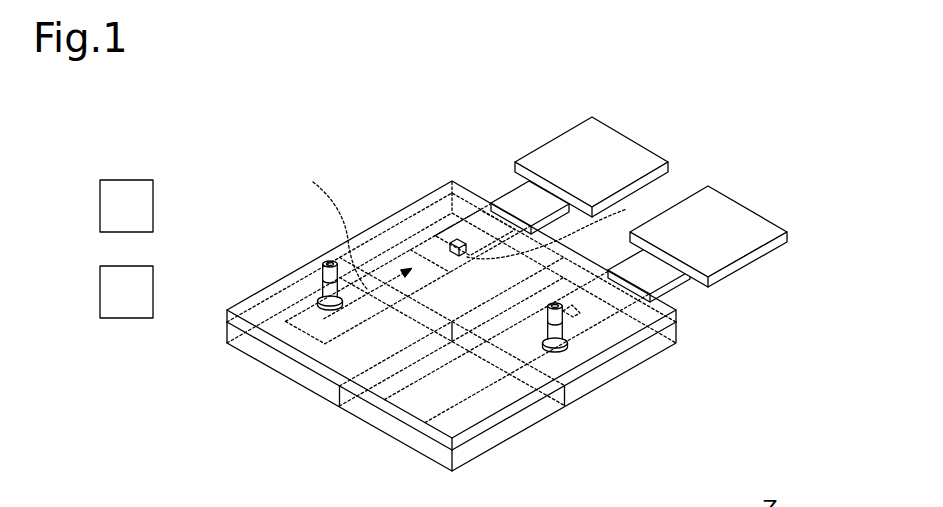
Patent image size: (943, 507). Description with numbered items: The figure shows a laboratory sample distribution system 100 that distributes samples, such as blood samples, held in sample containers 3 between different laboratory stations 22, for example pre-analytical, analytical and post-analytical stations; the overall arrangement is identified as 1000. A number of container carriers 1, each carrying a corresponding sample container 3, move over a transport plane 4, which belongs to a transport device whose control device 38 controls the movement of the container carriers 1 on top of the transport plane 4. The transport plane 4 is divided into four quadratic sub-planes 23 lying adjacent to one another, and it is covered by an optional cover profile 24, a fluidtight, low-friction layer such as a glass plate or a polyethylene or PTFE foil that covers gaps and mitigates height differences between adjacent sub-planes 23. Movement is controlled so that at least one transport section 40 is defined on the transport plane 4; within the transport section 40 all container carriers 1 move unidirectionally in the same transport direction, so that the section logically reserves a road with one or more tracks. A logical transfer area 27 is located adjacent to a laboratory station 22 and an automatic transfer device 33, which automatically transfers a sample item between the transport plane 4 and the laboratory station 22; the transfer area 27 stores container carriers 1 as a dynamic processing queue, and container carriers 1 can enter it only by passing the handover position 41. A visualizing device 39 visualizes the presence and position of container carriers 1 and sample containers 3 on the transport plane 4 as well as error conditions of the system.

The container carrier 1 is at (320, 287).
The sample container 3 is at (323, 270).
The transport plane 4 is at (429, 302).
The laboratory station 22 is at (615, 148).
The sub-plane 23 is at (253, 346).
The cover profile 24 is at (397, 215).
The transfer area 27 is at (435, 234).
The automatic transfer device 33 is at (515, 197).
The control device 38 is at (113, 306).
The visualizing device 39 is at (113, 220).
The transport section 40 is at (283, 320).
The handover position 41 is at (556, 304).
The laboratory sample distribution system 100 is at (350, 97).
The system 1000 is at (117, 119).